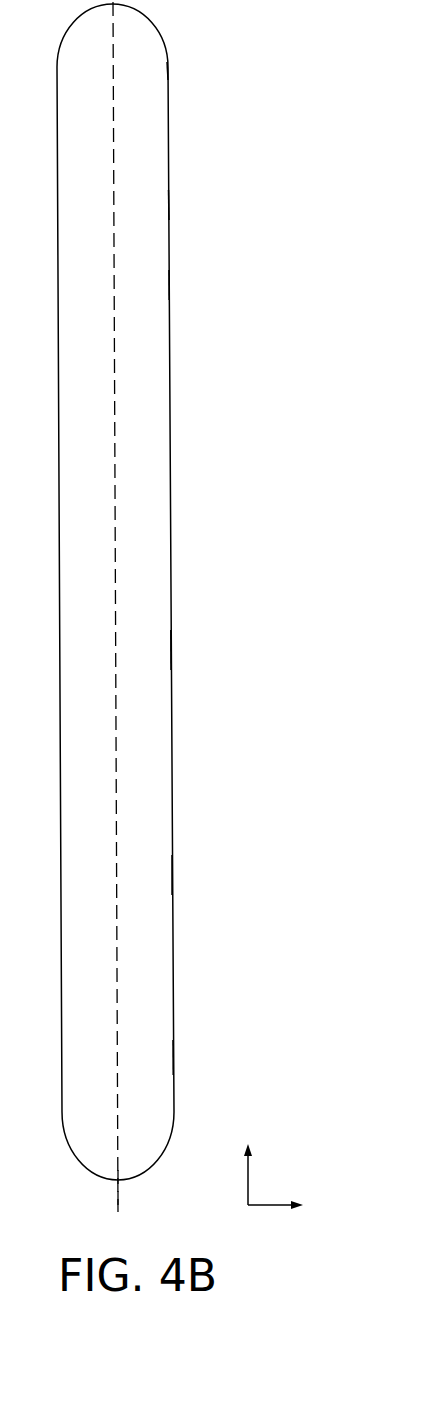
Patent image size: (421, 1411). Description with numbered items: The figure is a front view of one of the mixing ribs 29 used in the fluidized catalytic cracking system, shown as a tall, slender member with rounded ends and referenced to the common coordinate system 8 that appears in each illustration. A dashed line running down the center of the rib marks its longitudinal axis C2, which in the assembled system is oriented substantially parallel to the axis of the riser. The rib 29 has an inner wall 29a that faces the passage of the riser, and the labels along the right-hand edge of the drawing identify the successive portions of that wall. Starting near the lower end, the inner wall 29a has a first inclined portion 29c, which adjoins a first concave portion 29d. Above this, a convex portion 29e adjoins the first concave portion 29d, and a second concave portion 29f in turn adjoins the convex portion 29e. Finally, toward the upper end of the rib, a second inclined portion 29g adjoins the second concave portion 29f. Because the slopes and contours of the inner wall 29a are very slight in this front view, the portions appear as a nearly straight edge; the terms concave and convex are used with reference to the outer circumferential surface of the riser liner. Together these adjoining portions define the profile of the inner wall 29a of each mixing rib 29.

The mixing rib 29 is at (211, 53).
The inner wall 29a is at (169, 205).
The first inclined portion 29c is at (168, 1052).
The first concave portion 29d is at (156, 876).
The convex portion 29e is at (152, 658).
The second concave portion 29f is at (169, 283).
The second inclined portion 29g is at (168, 67).
The longitudinal axis C2 is at (118, 1182).
The coordinate system 8 is at (265, 1205).